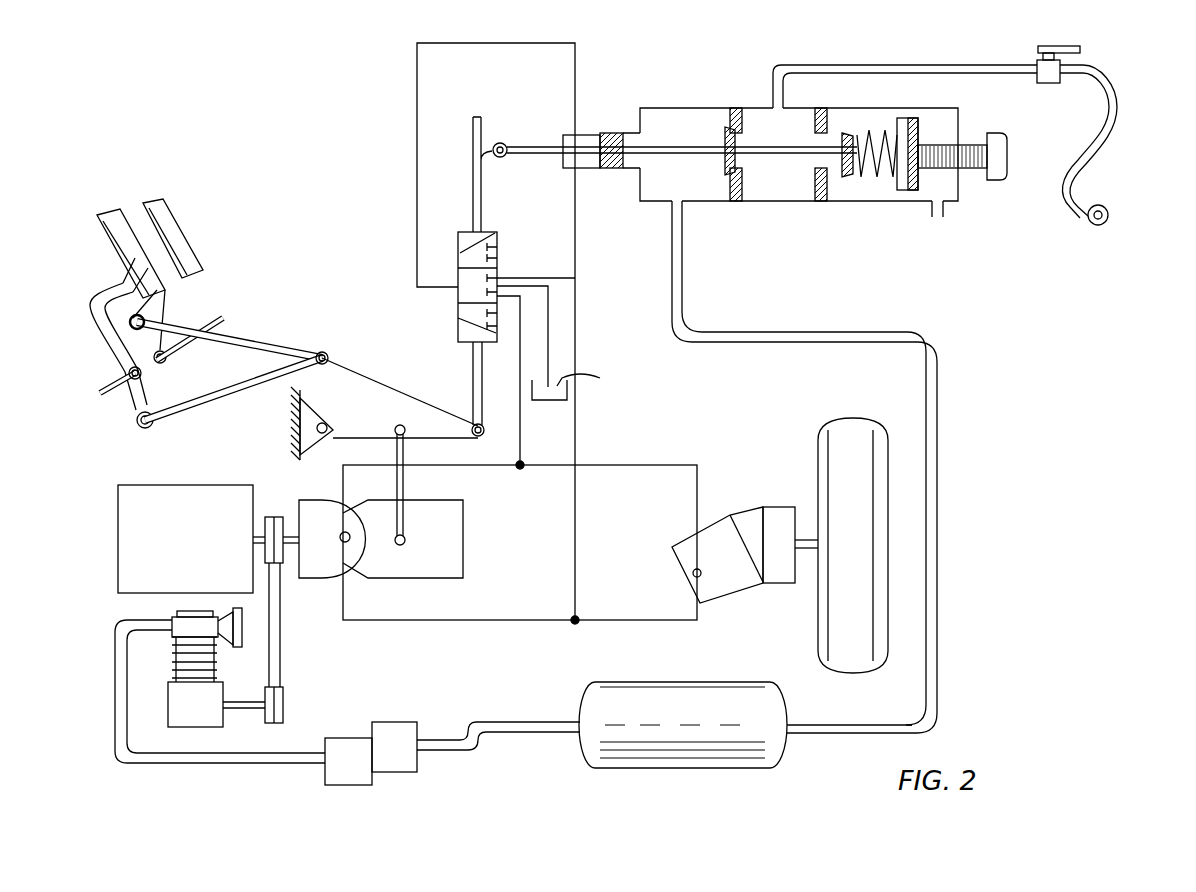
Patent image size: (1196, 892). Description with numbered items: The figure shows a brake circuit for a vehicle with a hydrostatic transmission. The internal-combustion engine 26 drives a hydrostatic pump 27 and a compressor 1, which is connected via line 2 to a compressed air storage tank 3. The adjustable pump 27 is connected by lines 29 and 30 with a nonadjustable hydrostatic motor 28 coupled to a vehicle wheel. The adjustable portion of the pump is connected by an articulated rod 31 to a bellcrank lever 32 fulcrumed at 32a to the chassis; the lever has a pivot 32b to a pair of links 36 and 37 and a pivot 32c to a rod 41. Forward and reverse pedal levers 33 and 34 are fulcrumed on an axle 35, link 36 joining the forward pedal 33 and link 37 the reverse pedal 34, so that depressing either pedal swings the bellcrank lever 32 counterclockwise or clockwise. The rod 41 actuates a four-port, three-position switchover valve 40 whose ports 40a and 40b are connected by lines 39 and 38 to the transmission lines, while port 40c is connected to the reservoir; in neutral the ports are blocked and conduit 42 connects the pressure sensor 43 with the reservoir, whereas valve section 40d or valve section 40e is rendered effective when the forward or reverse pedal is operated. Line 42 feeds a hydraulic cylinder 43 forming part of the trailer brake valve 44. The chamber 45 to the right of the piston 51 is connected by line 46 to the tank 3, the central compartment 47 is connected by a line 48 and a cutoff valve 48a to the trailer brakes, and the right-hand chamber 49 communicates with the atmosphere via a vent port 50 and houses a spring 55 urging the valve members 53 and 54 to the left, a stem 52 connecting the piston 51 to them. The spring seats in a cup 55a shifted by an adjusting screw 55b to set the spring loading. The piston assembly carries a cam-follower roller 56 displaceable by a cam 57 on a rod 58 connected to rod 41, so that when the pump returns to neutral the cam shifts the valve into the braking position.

The compressor 1 is at (167, 717).
The line 2 is at (477, 737).
The compressed air storage tank 3 is at (686, 763).
The internal-combustion engine 26 is at (127, 525).
The hydrostatic pump 27 is at (452, 562).
The hydrostatic motor 28 is at (733, 588).
The line 29 is at (641, 621).
The line 30 is at (670, 466).
The articulated rod 31 is at (405, 483).
The bellcrank lever 32 is at (378, 376).
The fulcrum 32a is at (297, 430).
The pivot 32b is at (320, 352).
The pivot 32c is at (472, 437).
The pedal lever 33 is at (152, 250).
The pedal lever 34 is at (108, 268).
The axle 35 is at (112, 383).
The link 36 is at (250, 343).
The link 37 is at (187, 407).
The line 38 is at (577, 504).
The line 39 is at (521, 426).
The switchover valve 40 is at (488, 235).
The port 40a is at (498, 296).
The port 40b is at (496, 278).
The port 40c is at (498, 286).
The valve section 40d is at (468, 343).
The valve section 40e is at (458, 240).
The rod 41 is at (474, 388).
The conduit 42 is at (417, 70).
The hydraulic cylinder 43 is at (583, 168).
The trailer brake valve 44 is at (690, 107).
The chamber 45 is at (657, 203).
The line 46 is at (938, 440).
The central compartment 47 is at (773, 183).
The line 48 is at (1105, 82).
The cutoff valve 48a is at (1048, 83).
The right-hand chamber 49 is at (865, 117).
The vent port 50 is at (937, 217).
The piston 51 is at (613, 135).
The stem 52 is at (690, 147).
The valve member 53 is at (722, 177).
The valve member 54 is at (843, 180).
The spring 55 is at (881, 180).
The cup 55a is at (900, 118).
The adjusting screw 55b is at (977, 168).
The cam-follower roller 56 is at (505, 158).
The cam 57 is at (493, 146).
The rod 58 is at (473, 180).